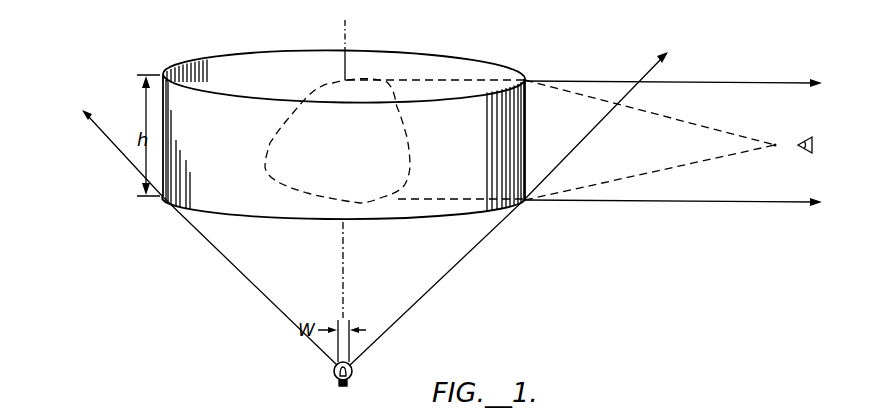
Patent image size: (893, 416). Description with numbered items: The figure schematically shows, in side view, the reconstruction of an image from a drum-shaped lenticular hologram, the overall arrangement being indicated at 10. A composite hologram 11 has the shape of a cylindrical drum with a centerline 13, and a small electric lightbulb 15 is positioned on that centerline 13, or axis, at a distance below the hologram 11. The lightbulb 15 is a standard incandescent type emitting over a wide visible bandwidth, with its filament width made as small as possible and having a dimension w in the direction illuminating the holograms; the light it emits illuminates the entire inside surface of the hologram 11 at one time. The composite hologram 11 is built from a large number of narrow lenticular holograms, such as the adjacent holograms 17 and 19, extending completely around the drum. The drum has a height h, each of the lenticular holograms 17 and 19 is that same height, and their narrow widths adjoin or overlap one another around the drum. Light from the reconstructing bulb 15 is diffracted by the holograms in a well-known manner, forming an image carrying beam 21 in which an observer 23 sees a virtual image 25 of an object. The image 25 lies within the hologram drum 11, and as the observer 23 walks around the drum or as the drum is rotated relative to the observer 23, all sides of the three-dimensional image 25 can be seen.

The illuminating light cone 10 is at (375, 208).
The composite hologram 11 is at (403, 60).
The centerline 13 is at (345, 22).
The lightbulb 15 is at (352, 378).
The lenticular hologram 17 is at (511, 72).
The lenticular hologram 19 is at (525, 78).
The image carrying beam 21 is at (723, 92).
The observer 23 is at (812, 137).
The virtual image 25 is at (321, 86).